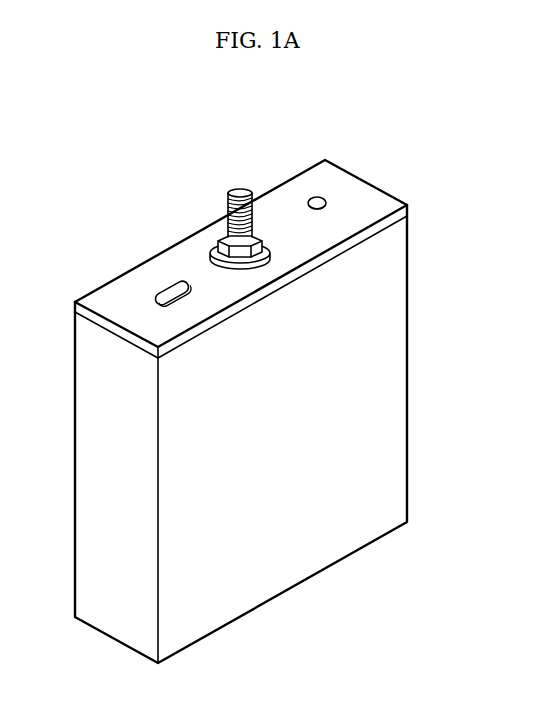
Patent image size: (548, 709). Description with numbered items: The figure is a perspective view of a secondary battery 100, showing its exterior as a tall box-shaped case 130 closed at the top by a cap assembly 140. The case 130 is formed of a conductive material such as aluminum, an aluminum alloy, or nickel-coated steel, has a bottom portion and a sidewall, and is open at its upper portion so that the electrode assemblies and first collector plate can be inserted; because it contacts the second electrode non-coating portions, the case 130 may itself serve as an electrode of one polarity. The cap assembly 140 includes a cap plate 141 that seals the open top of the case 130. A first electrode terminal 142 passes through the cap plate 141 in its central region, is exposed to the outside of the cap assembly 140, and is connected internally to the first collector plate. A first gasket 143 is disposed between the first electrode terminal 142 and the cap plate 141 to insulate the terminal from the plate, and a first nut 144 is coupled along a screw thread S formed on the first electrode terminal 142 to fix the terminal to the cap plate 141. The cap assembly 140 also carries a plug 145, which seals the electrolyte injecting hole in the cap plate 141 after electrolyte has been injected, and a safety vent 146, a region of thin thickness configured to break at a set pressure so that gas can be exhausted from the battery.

The secondary battery 100 is at (51, 133).
The case 130 is at (395, 352).
The cap assembly 140 is at (376, 169).
The cap plate 141 is at (398, 221).
The first electrode terminal 142 is at (242, 190).
The first gasket 143 is at (212, 249).
The first nut 144 is at (221, 237).
The plug 145 is at (316, 198).
The safety vent 146 is at (166, 287).
The screw thread S is at (226, 214).